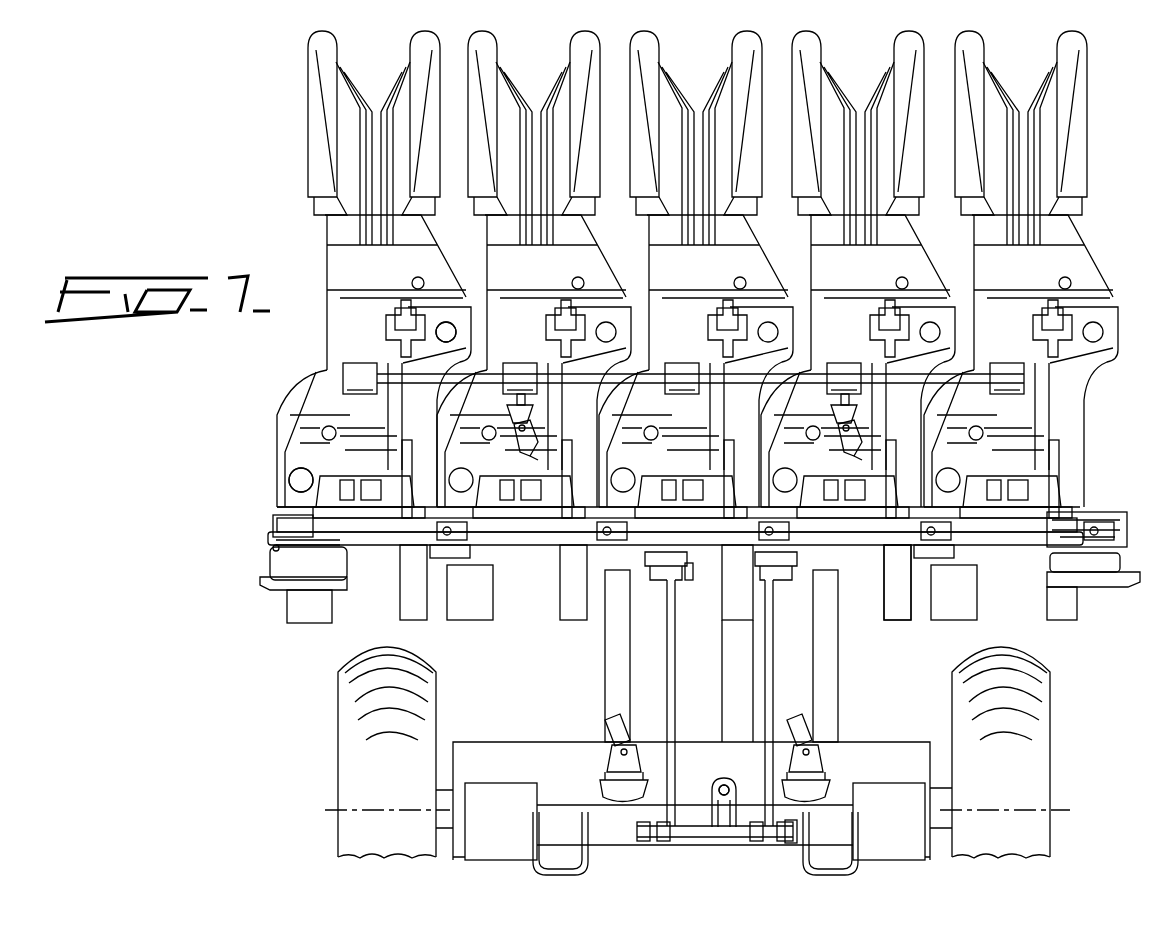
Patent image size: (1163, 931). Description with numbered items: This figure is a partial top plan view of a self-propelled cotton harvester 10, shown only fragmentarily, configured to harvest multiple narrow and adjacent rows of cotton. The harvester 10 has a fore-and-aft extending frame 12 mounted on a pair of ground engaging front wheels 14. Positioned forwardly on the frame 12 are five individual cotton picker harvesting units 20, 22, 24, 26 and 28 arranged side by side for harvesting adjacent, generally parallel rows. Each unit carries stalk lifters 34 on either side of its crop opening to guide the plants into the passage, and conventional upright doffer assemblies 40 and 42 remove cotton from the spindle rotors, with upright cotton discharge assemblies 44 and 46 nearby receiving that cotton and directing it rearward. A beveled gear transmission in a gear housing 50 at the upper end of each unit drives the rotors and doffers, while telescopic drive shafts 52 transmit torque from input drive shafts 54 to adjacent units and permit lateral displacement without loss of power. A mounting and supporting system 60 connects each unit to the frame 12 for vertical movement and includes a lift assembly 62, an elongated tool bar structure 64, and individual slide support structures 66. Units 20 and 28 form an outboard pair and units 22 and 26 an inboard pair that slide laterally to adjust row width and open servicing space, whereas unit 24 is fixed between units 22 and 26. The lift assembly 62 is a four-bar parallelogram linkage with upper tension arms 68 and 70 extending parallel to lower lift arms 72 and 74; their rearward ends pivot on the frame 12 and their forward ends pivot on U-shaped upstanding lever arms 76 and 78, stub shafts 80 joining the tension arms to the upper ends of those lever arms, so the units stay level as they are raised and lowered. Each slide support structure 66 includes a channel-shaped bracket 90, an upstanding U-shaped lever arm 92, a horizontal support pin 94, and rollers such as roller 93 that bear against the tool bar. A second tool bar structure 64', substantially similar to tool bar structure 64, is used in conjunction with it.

The cotton harvester 10 is at (278, 676).
The frame 12 is at (483, 742).
The front wheels 14 is at (348, 757).
The harvesting unit 20 is at (366, 276).
The harvesting unit 22 is at (526, 276).
The harvesting unit 24 is at (688, 276).
The harvesting unit 26 is at (850, 276).
The harvesting unit 28 is at (1013, 276).
The stalk lifters 34 is at (410, 62).
The doffer assembly 40 is at (449, 323).
The doffer assembly 42 is at (290, 484).
The cotton discharge assembly 44 is at (412, 607).
The cotton discharge assembly 46 is at (306, 612).
The gear housing 50 is at (683, 378).
The telescopic drive shafts 52 is at (516, 394).
The input drive shafts 54 is at (540, 450).
The mounting and supporting system 60 is at (549, 546).
The lift assembly 62 is at (766, 706).
The tool bar structure 64 is at (273, 552).
The second tool bar structure 64' is at (1093, 546).
The slide support structure 66 is at (370, 500).
The upper tension arm 68 is at (668, 667).
The upper tension arm 70 is at (765, 682).
The lift arm 72 is at (606, 660).
The lift arm 74 is at (836, 660).
The lever arm 76 is at (692, 584).
The lever arm 78 is at (748, 592).
The stub shafts 80 is at (662, 570).
The channel-shaped bracket 90 is at (722, 782).
The lever arm 92 is at (708, 823).
The roller 93 is at (790, 843).
The support pin 94 is at (734, 786).